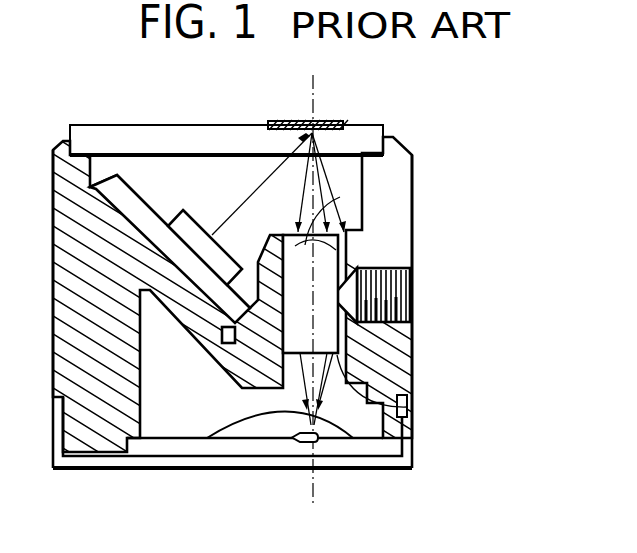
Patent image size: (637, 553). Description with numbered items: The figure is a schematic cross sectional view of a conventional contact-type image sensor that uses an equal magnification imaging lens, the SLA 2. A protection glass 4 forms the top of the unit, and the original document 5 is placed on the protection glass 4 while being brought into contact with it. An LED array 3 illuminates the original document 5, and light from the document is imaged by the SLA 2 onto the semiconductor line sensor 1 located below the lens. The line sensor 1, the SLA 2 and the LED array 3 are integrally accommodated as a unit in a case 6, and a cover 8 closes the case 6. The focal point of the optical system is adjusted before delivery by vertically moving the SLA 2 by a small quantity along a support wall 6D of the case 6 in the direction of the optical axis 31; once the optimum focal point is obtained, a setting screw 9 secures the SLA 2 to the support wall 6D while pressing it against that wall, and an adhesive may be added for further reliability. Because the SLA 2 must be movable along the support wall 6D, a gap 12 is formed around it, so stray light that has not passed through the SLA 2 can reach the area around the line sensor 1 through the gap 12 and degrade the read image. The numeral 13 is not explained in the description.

The semiconductor line sensor 1 is at (297, 432).
The SLA 2 is at (338, 240).
The LED array 3 is at (183, 210).
The protection glass 4 is at (240, 140).
The original document 5 is at (344, 122).
The case 6 is at (412, 257).
The support wall 6D is at (340, 197).
The cover 8 is at (360, 470).
The setting screw 9 is at (412, 303).
The gap 12 is at (350, 350).
The housing notch 13 is at (407, 407).
The optical axis 31 is at (313, 98).